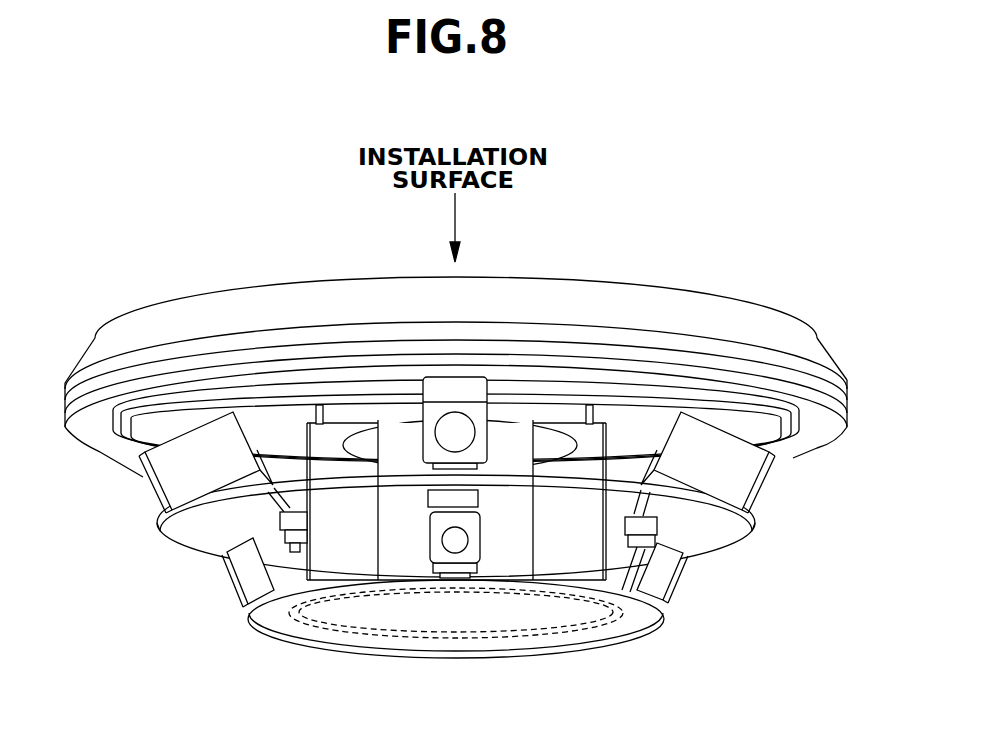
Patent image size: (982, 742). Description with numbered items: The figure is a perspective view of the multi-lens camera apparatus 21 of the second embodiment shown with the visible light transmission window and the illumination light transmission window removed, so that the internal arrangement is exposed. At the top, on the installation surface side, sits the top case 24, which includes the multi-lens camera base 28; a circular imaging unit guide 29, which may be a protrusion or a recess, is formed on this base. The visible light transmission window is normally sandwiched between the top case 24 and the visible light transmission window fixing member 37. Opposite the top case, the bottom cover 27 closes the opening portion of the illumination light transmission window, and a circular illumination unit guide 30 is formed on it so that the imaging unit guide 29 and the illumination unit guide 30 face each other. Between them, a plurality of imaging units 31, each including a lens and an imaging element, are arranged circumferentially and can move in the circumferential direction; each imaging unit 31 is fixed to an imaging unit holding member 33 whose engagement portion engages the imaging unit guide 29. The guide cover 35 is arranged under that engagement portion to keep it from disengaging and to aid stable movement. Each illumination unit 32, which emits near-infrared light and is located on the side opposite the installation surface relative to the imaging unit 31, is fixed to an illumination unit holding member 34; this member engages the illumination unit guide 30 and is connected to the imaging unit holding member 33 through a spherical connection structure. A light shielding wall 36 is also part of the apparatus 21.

The multi-lens camera apparatus 21 is at (78, 298).
The top case 24 is at (750, 310).
The bottom cover 27 is at (462, 627).
The multi-lens camera base 28 is at (660, 388).
The imaging unit guide 29 is at (358, 402).
The illumination unit guide 30 is at (339, 640).
The imaging unit 31 is at (440, 386).
The illumination unit 32 is at (247, 573).
The imaging unit holding member 33 is at (272, 440).
The illumination unit holding member 34 is at (295, 570).
The guide cover 35 is at (586, 408).
The light shielding wall 36 is at (728, 541).
The visible light transmission window fixing member 37 is at (817, 435).